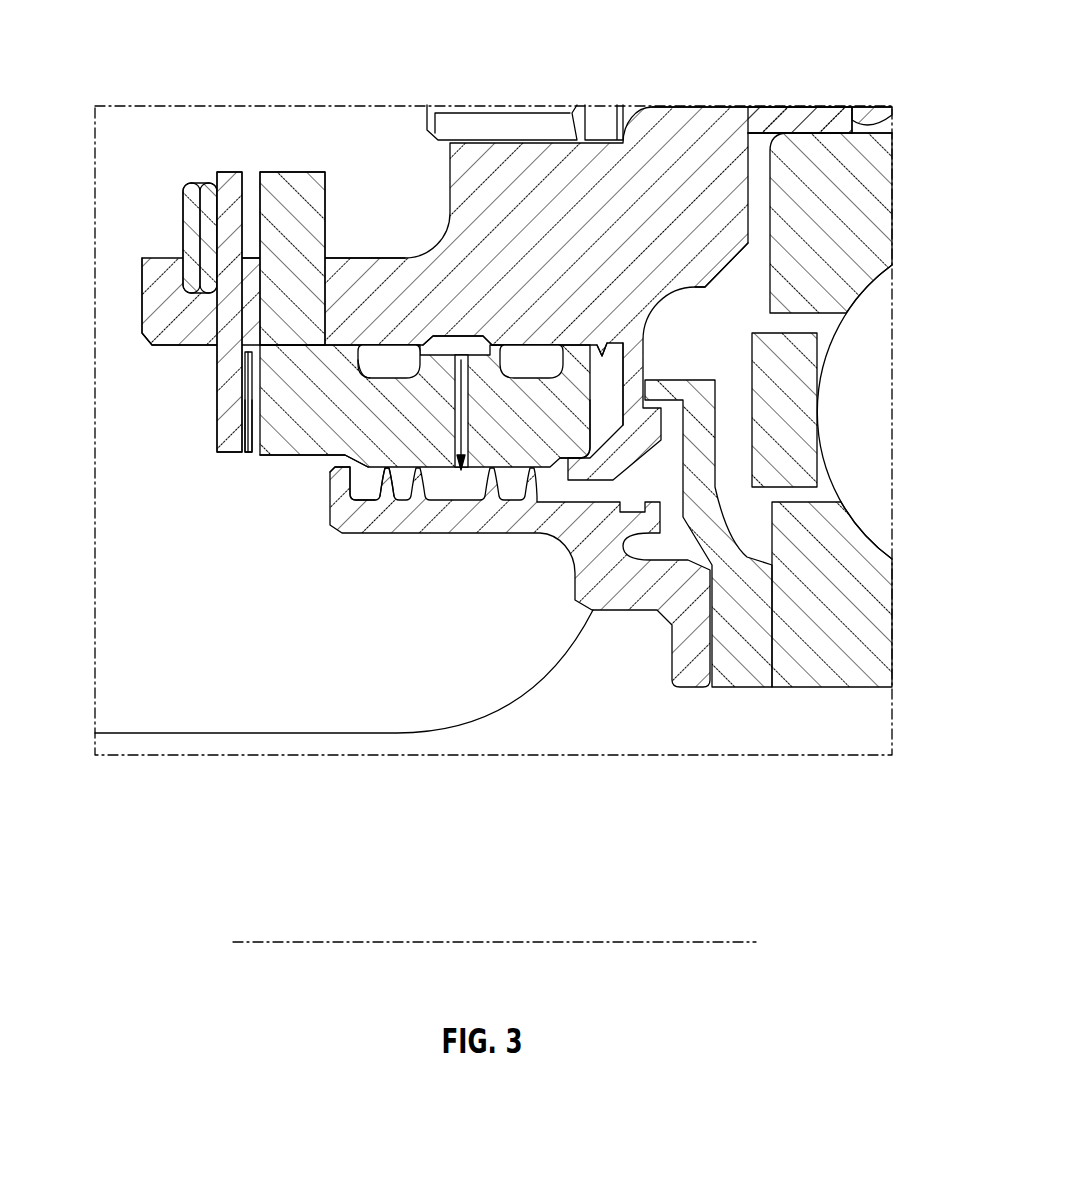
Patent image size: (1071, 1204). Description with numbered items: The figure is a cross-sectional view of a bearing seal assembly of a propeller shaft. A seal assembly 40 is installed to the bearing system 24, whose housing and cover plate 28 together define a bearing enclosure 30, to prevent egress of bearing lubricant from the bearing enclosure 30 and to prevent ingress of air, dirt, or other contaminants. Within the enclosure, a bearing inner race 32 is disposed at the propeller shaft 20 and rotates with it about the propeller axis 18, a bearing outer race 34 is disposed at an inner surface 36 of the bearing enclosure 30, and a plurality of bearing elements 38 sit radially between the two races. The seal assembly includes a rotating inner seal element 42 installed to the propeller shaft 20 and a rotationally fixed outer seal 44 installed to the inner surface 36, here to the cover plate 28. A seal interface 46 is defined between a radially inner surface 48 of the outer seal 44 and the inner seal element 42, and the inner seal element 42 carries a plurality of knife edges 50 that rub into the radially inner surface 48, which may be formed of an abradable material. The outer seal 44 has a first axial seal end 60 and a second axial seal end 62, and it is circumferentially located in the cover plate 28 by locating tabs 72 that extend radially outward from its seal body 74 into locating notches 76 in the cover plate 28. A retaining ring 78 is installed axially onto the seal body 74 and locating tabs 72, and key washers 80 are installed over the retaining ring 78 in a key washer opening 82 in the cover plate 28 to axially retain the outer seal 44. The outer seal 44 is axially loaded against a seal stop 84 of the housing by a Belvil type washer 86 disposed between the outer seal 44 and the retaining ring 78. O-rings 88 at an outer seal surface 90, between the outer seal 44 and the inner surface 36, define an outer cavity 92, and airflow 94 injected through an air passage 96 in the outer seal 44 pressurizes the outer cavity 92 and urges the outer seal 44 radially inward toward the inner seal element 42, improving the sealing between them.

The propeller axis 18 is at (383, 943).
The propeller shaft 20 is at (192, 745).
The bearing system 24 is at (873, 86).
The cover plate 28 is at (456, 226).
The bearing enclosure 30 is at (740, 268).
The bearing inner race 32 is at (818, 628).
The bearing outer race 34 is at (817, 236).
The inner surface 36 is at (756, 130).
The bearing elements 38 is at (840, 436).
The seal assembly 40 is at (113, 470).
The inner seal element 42 is at (608, 589).
The outer seal 44 is at (583, 353).
The seal interface 46 is at (298, 470).
The radially inner surface 48 is at (380, 463).
The knife edges 50 is at (420, 472).
The first axial seal end 60 is at (584, 398).
The second axial seal end 62 is at (251, 416).
The locating tabs 72 is at (295, 181).
The seal body 74 is at (401, 446).
The locating notches 76 is at (327, 258).
The retaining ring 78 is at (235, 178).
The key washers 80 is at (191, 204).
The key washer opening 82 is at (178, 261).
The seal stop 84 is at (594, 374).
The Belvil type washer 86 is at (243, 379).
The O-rings 88 is at (389, 345).
The outer seal surface 90 is at (356, 366).
The outer cavity 92 is at (496, 341).
The airflow 94 is at (454, 406).
The air passage 96 is at (453, 345).